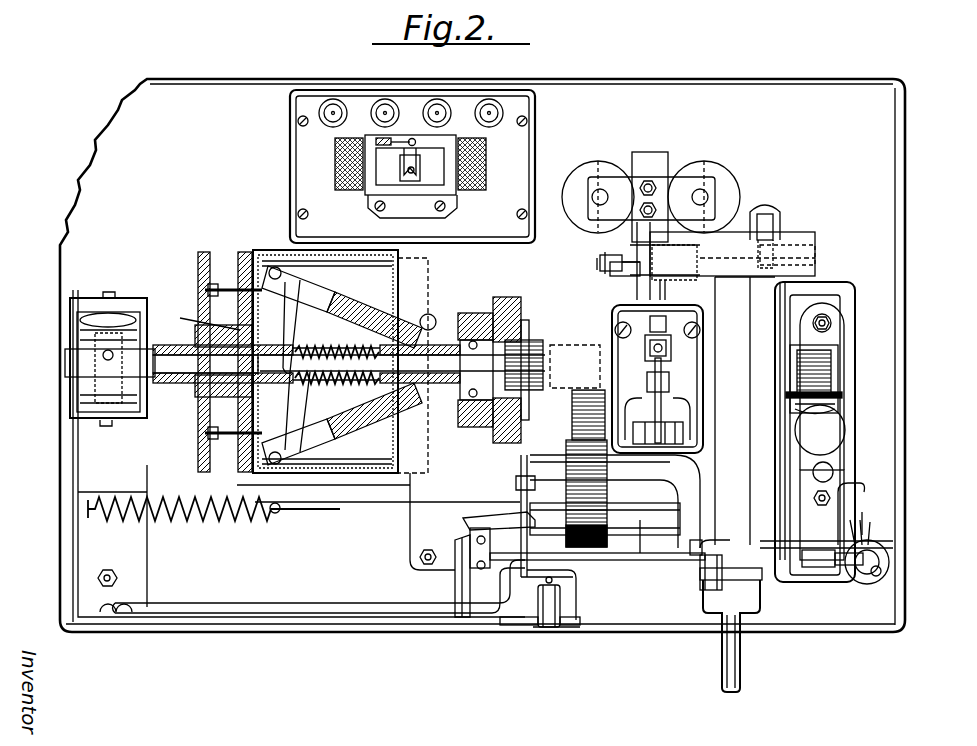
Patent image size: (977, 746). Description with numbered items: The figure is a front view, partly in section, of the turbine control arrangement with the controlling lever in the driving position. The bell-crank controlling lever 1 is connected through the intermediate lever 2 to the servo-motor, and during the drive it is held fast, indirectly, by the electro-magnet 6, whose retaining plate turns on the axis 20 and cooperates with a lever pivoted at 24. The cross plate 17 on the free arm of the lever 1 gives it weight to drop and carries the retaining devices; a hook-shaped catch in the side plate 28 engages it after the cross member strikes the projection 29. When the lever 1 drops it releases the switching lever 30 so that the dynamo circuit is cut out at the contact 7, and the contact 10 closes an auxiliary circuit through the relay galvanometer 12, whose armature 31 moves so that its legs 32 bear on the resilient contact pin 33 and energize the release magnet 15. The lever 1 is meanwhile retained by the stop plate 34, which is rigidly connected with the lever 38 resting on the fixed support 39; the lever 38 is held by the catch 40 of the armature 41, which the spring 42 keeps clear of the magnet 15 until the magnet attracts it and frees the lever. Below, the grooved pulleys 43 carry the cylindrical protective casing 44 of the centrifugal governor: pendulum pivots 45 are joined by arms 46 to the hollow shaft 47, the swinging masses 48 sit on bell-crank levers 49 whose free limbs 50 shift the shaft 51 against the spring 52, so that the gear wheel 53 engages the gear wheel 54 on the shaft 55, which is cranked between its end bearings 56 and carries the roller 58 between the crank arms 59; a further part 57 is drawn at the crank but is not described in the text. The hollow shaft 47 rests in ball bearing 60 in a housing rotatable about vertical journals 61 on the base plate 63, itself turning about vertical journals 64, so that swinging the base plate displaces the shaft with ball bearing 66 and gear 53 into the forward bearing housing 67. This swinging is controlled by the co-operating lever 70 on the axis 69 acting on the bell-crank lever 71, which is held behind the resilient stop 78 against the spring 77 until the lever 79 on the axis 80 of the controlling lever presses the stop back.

The bell-crank controlling lever 1 is at (732, 432).
The intermediate lever 2 is at (738, 655).
The electro-magnet 6 is at (722, 190).
The contact 7 is at (668, 348).
The contact 10 is at (668, 380).
The relay galvanometer 12 is at (342, 178).
The release magnet 15 is at (835, 440).
The cross plate 17 is at (800, 268).
The axis 20 is at (600, 262).
The pivot 24 is at (778, 222).
The side plate 28 is at (830, 298).
The projection 29 is at (790, 252).
The switching lever 30 is at (637, 355).
The armature 31 is at (420, 178).
The legs 32 is at (368, 160).
The resilient contact pin 33 is at (416, 160).
The stop plate 34 is at (830, 392).
The lever 38 is at (820, 368).
The fixed support 39 is at (830, 408).
The catch 40 is at (838, 332).
The armature 41 is at (825, 430).
The spring 42 is at (285, 620).
The grooved pulleys 43 is at (212, 252).
The cylindrical protective casing 44 is at (275, 250).
The pendulum pivots 45 is at (205, 287).
The arms 46 is at (920, 573).
The hollow shaft 47 is at (163, 380).
The swinging masses 48 is at (418, 300).
The bell-crank levers 49 is at (302, 455).
The free limbs 50 is at (240, 425).
The shaft 51 is at (283, 470).
The spring 52 is at (340, 470).
The gear wheel 53 is at (560, 345).
The gear wheel 54 is at (572, 425).
The shaft 55 is at (565, 480).
The end bearings / crank pin 56 is at (522, 483).
The roller 57 is at (755, 575).
The roller 58 is at (700, 575).
The crank arms 59 is at (690, 532).
The ball bearing 60 is at (72, 360).
The vertical journals 61 is at (110, 293).
The base plate 63 is at (78, 492).
The vertical journals 64 is at (105, 607).
The ball bearing 66 is at (473, 378).
The forward bearing housing 67 is at (505, 440).
The axis 69 is at (565, 600).
The co-operating lever 70 is at (505, 625).
The bell-crank lever 71 is at (530, 630).
The spring 77 is at (178, 520).
The resilient stop 78 is at (458, 600).
The lever 79 is at (463, 522).
The axis 80 is at (640, 520).